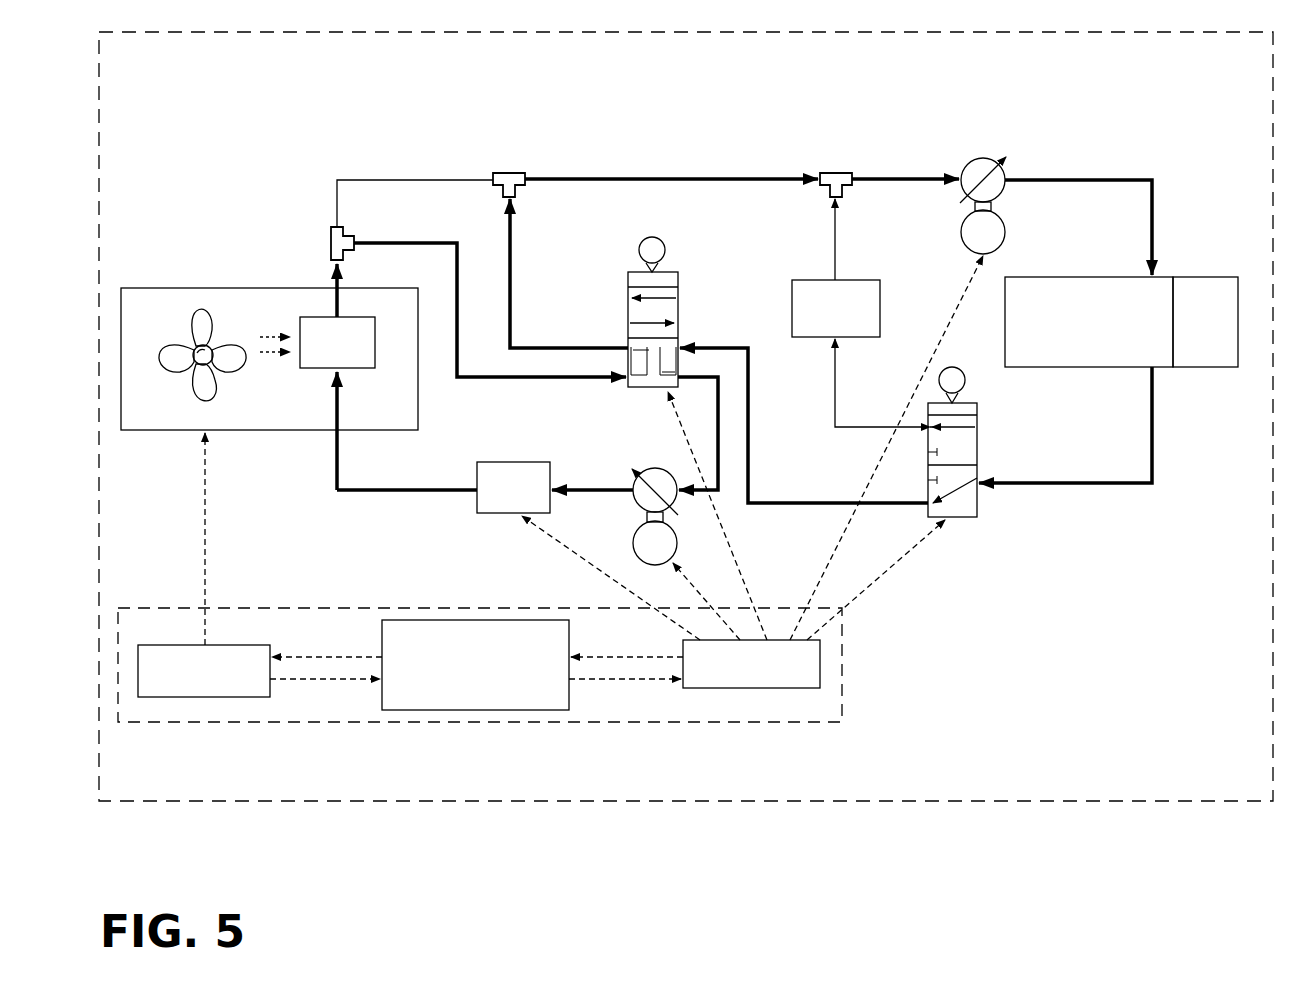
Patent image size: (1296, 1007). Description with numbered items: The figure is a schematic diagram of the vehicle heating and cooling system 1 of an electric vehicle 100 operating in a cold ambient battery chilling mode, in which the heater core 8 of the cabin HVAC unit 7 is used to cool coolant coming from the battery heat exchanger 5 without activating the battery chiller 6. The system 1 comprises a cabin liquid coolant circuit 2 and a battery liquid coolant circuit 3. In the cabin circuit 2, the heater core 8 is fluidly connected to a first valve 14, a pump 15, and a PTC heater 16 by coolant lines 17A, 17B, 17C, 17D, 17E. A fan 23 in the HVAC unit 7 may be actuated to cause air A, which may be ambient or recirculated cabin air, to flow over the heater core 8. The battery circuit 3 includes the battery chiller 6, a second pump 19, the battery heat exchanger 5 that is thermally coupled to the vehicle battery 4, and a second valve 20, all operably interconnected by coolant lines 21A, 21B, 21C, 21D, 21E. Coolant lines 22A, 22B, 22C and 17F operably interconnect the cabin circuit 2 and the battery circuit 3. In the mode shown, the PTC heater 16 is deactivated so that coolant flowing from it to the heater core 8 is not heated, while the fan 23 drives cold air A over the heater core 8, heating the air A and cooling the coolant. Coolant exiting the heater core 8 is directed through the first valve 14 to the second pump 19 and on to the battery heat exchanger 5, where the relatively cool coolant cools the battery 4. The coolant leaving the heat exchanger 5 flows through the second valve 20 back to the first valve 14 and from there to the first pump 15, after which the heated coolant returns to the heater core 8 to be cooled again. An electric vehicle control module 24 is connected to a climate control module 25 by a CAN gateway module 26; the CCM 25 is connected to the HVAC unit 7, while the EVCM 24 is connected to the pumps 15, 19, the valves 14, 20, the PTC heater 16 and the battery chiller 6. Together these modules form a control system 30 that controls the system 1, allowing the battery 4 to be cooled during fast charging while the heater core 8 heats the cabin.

The vehicle heating and cooling system 1 is at (825, 110).
The cabin liquid coolant circuit 2 is at (325, 495).
The battery liquid coolant circuit 3 is at (1120, 167).
The battery 4 is at (1195, 277).
The battery heat exchanger 5 is at (1105, 277).
The battery chiller 6 is at (880, 300).
The cabin HVAC unit 7 is at (257, 405).
The heater core 8 is at (375, 343).
The first valve 14 is at (627, 322).
The pump 15 is at (653, 460).
The PTC heater 16 is at (523, 460).
The coolant line 17A is at (330, 296).
The coolant line 17B is at (397, 241).
The coolant line 17C is at (715, 387).
The coolant line 17D is at (585, 492).
The coolant line 17E is at (405, 492).
The coolant line 17F is at (393, 177).
The second pump 19 is at (983, 160).
The second valve 20 is at (980, 470).
The coolant line 21A is at (835, 382).
The coolant line 21B is at (833, 248).
The coolant line 21C is at (893, 178).
The coolant line 21D is at (1155, 215).
The coolant line 21E is at (1120, 485).
The coolant line 22A is at (780, 505).
The coolant line 22B is at (535, 346).
The coolant line 22C is at (617, 177).
The fan 23 is at (185, 395).
The electric vehicle control module (EVCM) 24 is at (751, 690).
The climate control module (CCM) 25 is at (205, 699).
The CAN gateway module 26 is at (468, 712).
The control system 30 is at (842, 665).
The electric vehicle 100 is at (1018, 805).
The air A is at (268, 334).